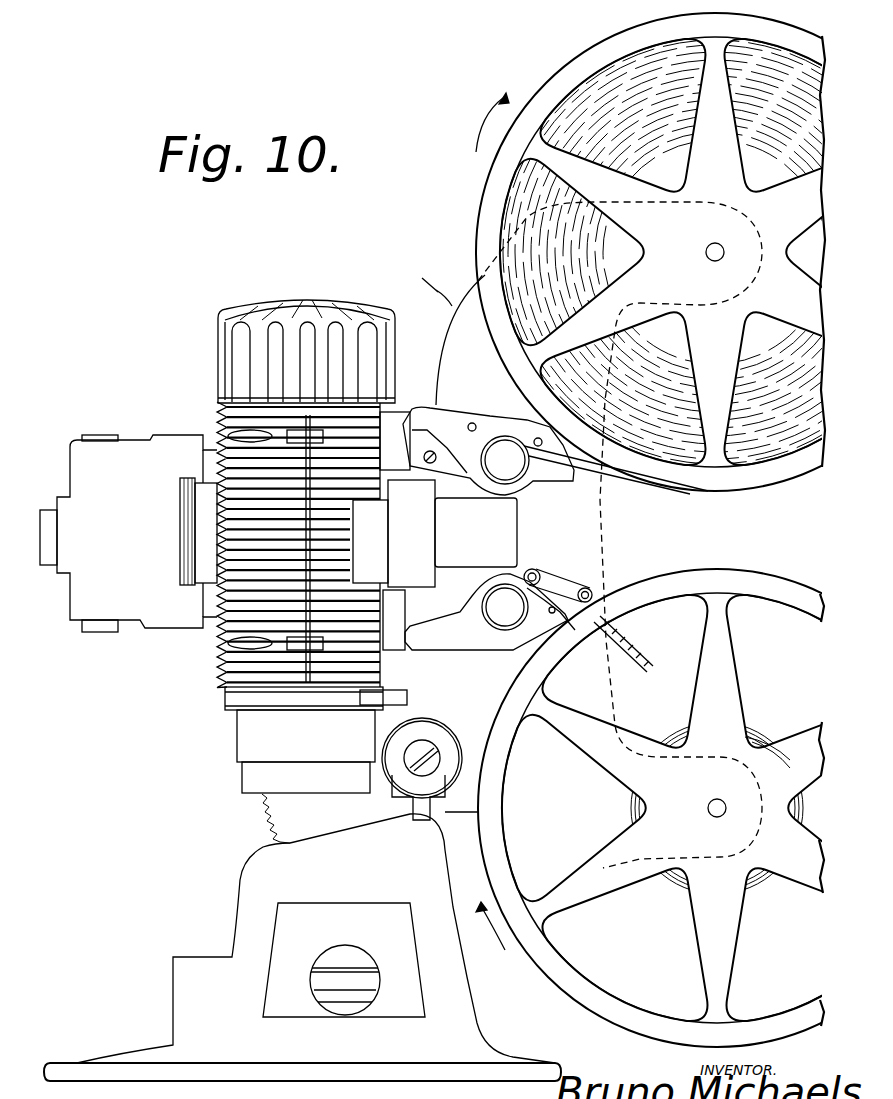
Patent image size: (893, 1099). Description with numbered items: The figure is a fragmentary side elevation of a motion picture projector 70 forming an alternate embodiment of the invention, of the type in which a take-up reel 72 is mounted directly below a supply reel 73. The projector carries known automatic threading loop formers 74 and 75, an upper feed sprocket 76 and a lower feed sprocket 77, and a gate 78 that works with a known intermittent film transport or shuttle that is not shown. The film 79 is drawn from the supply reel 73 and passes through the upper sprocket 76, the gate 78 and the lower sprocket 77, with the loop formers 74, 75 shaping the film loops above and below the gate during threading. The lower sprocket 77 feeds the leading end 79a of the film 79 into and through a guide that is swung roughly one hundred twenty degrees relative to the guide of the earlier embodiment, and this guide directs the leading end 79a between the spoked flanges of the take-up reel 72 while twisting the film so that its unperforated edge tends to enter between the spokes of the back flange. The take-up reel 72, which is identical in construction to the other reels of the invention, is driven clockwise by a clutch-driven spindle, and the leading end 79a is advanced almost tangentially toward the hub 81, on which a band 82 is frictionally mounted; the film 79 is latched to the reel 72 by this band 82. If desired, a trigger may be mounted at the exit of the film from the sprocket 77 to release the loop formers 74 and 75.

The projector 70 is at (234, 283).
The take-up reel 72 is at (545, 992).
The supply reel 73 is at (466, 218).
The automatic threading loop former 74 is at (452, 414).
The automatic threading loop former 75 is at (462, 640).
The upper feed sprocket 76 is at (513, 468).
The lower feed sprocket 77 is at (507, 597).
The gate 78 is at (422, 525).
The film 79 is at (627, 637).
The leading end of the film 79a is at (643, 674).
The hub 81 is at (758, 746).
The band 82 is at (761, 731).